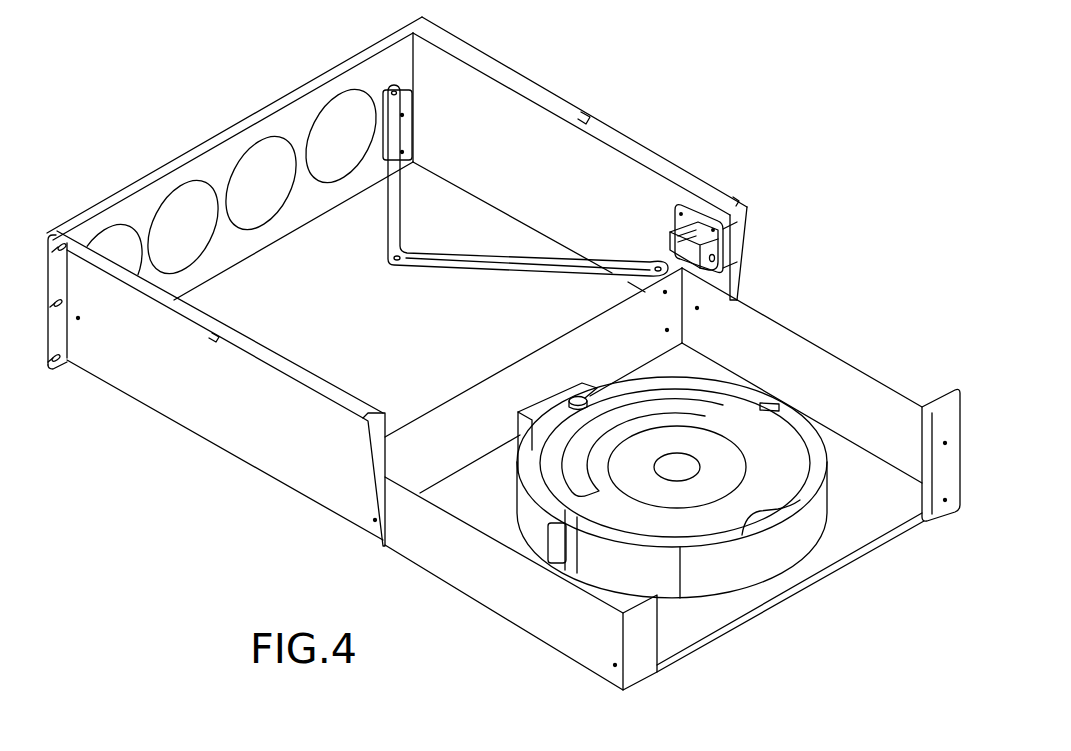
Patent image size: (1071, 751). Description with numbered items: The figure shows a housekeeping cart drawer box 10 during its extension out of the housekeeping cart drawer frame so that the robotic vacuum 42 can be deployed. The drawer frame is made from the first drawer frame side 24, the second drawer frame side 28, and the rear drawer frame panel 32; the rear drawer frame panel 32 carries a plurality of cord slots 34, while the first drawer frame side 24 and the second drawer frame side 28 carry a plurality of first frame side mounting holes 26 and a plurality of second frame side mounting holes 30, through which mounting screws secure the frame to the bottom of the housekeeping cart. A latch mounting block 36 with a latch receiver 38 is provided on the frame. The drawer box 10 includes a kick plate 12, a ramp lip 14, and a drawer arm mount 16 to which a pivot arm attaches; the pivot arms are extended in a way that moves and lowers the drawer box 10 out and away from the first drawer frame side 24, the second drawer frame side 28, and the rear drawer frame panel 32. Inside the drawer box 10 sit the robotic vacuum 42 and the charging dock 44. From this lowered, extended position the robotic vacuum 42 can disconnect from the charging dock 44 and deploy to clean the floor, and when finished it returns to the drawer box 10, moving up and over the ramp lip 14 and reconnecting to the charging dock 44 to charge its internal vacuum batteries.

The housekeeping cart drawer box 10 is at (762, 322).
The kick plate 12 is at (944, 512).
The ramp lip 14 is at (717, 637).
The drawer arm mount 16 is at (651, 283).
The first drawer frame side 24 is at (185, 413).
The first frame side mounting holes 26 is at (363, 410).
The second drawer frame side 28 is at (623, 140).
The second frame side mounting holes 30 is at (590, 122).
The rear drawer frame panel 32 is at (163, 168).
The cord slots 34 is at (322, 123).
The latch mounting block 36 is at (695, 205).
The latch receiver 38 is at (671, 240).
The robotic vacuum 42 is at (777, 568).
The charging dock 44 is at (540, 412).